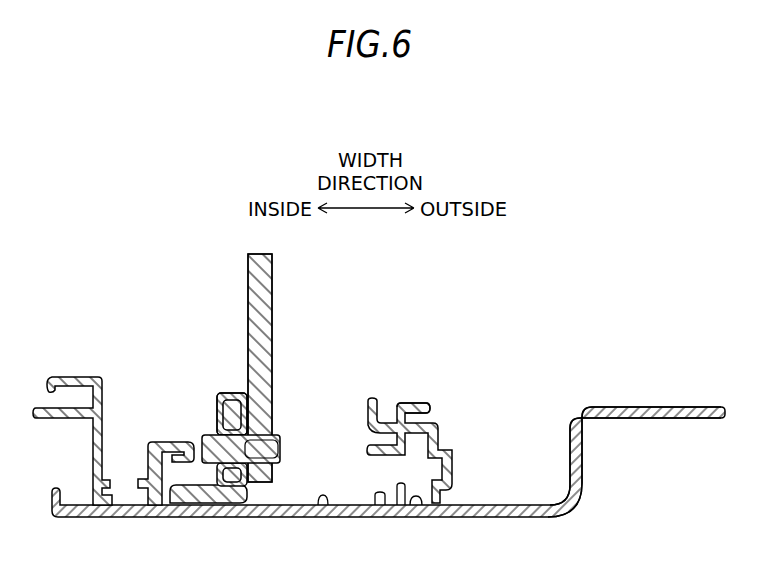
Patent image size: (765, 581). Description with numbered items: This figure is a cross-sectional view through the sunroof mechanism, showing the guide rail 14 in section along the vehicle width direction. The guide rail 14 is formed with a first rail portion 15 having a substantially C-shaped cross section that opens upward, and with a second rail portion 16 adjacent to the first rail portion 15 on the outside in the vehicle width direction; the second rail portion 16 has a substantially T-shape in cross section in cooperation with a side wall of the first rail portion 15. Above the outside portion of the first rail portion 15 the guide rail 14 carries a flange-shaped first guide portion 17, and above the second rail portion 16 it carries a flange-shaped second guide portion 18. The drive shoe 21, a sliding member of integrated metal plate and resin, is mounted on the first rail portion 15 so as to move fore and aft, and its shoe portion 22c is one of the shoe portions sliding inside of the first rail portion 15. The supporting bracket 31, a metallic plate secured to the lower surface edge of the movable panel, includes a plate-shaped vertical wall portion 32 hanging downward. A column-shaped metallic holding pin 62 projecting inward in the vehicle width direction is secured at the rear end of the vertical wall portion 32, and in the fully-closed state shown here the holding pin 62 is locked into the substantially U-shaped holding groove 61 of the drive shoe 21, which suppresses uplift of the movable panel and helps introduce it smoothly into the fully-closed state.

The guide rail 14 is at (584, 470).
The first rail portion 15 is at (322, 506).
The second rail portion 16 is at (416, 507).
The first guide portion 17 is at (374, 397).
The second guide portion 18 is at (431, 409).
The drive shoe 21 is at (231, 392).
The shoe portion 22c is at (188, 497).
The supporting bracket 31 is at (248, 320).
The vertical wall portion 32 is at (248, 282).
The holding groove 61 is at (279, 449).
The holding pin 62 is at (212, 443).